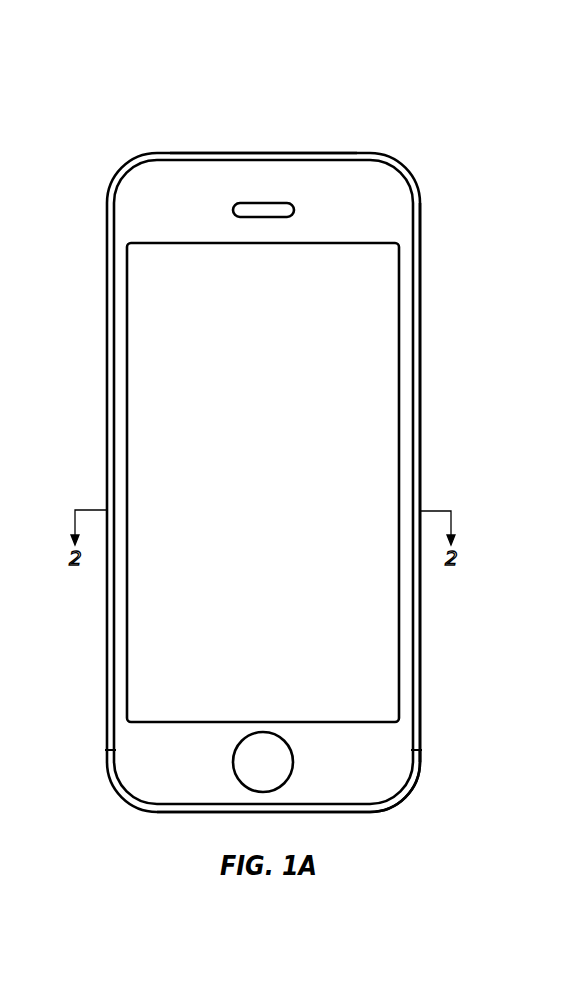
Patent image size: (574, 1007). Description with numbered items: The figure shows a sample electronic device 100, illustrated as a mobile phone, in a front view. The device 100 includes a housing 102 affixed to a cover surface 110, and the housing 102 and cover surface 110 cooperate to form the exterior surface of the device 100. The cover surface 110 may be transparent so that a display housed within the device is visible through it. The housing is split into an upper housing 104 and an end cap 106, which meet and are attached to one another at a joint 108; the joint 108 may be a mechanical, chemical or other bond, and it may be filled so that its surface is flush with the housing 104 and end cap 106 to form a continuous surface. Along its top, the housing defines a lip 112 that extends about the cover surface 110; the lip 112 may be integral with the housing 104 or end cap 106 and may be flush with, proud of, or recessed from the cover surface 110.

The electronic device 100 is at (274, 413).
The housing 102 is at (441, 258).
The housing 104 is at (421, 688).
The end cap 106 is at (420, 769).
The joint 108 is at (107, 750).
The cover surface 110 is at (376, 350).
The lip 112 is at (322, 155).